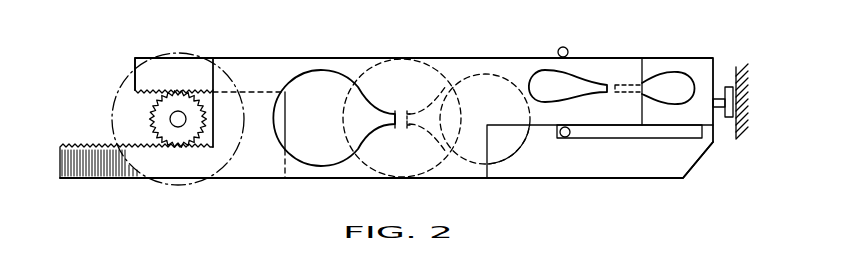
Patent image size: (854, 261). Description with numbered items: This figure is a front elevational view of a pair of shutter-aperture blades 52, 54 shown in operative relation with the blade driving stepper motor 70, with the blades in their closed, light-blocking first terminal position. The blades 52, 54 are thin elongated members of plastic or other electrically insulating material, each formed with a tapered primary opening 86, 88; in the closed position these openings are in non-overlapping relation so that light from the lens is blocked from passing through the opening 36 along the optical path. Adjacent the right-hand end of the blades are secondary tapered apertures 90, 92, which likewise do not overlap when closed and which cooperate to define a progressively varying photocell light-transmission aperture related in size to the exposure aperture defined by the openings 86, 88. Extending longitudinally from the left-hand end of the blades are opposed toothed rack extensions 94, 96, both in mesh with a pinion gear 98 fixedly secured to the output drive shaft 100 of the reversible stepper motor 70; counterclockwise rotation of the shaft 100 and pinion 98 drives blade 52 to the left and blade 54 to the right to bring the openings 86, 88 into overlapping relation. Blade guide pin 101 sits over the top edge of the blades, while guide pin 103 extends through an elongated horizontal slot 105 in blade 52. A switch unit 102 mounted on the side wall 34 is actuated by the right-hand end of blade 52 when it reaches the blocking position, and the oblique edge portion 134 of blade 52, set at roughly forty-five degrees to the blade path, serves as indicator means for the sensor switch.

The side wall 34 is at (739, 98).
The opening 36 is at (402, 80).
The shutter aperture blade 52 is at (543, 163).
The shutter aperture blade 54 is at (522, 68).
The reversible blade driver stepper motor 70 is at (170, 54).
The primary opening 86 is at (474, 85).
The primary opening 88 is at (318, 82).
The secondary tapered aperture 90 is at (672, 90).
The secondary tapered aperture 92 is at (556, 85).
The toothed rack extension 94 is at (143, 70).
The toothed rack extension 96 is at (60, 158).
The pinion gear 98 is at (160, 110).
The output drive shaft 100 is at (181, 122).
The blade guide pin 101 is at (563, 47).
The switch unit 102 is at (727, 87).
The blade guide pin 103 is at (564, 137).
The elongated horizontal slot 105 is at (633, 133).
The oblique edge portion 134 is at (696, 163).